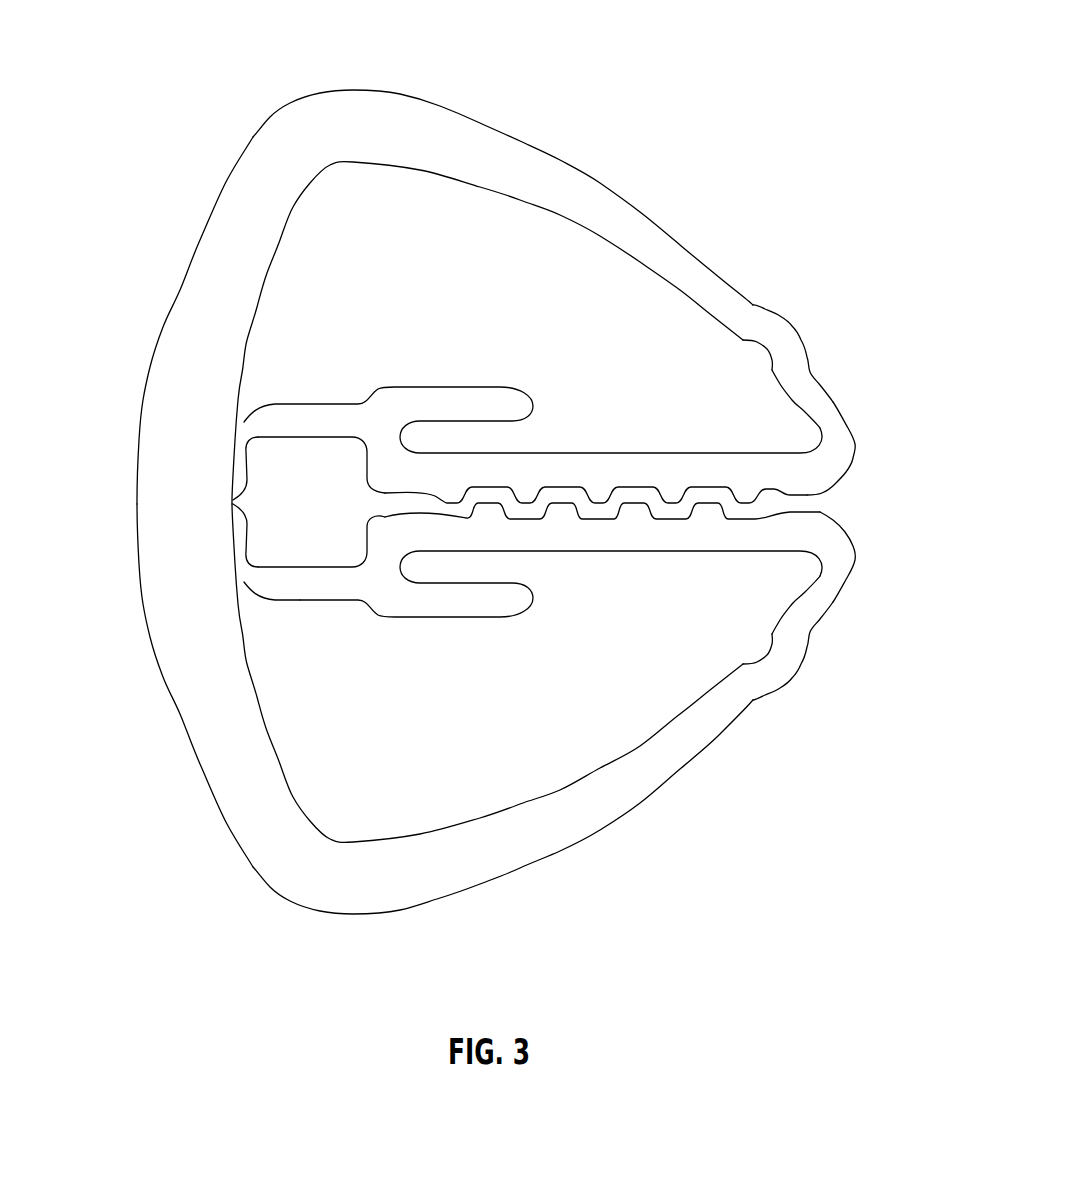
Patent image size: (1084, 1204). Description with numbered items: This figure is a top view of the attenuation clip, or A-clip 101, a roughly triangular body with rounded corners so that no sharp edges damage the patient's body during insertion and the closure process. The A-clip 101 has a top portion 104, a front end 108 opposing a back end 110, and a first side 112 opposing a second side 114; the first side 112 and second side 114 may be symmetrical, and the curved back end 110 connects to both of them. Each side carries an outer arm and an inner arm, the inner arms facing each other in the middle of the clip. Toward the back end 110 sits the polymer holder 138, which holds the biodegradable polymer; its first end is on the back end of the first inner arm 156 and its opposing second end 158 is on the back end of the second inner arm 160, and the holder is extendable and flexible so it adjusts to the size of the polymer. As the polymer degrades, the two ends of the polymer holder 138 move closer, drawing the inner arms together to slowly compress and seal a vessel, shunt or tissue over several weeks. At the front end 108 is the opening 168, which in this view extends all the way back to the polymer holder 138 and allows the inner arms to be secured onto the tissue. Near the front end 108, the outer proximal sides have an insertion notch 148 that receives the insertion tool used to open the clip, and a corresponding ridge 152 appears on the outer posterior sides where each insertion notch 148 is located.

The A-clip 101 is at (693, 39).
The top portion 104 is at (277, 147).
The front end 108 is at (857, 458).
The back end 110 is at (168, 563).
The first side 112 is at (368, 108).
The second side 114 is at (353, 870).
The polymer holder 138 is at (232, 495).
The insertion notch 148 is at (763, 355).
The ridge 152 is at (273, 421).
The first inner arm 156 is at (367, 463).
The second end 158 is at (275, 580).
The second inner arm 160 is at (367, 538).
The opening 168 is at (818, 502).